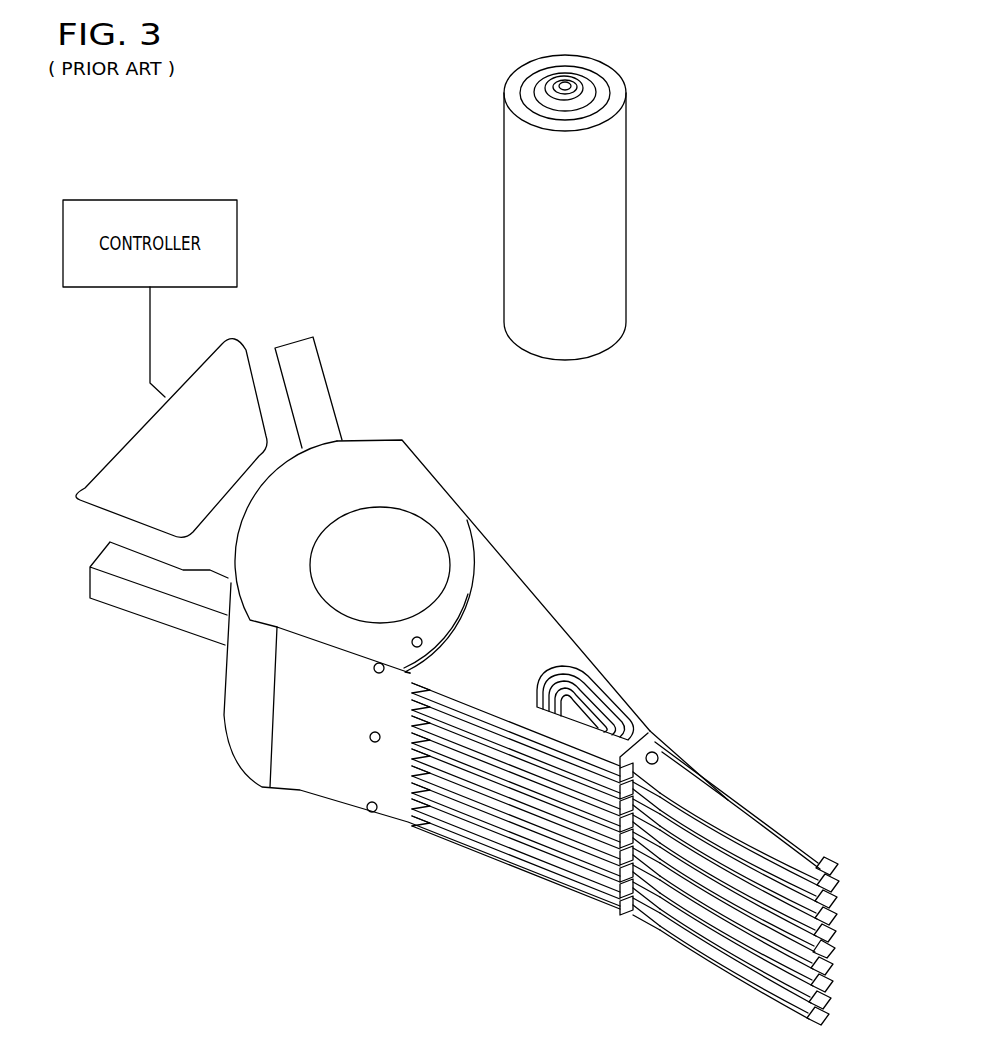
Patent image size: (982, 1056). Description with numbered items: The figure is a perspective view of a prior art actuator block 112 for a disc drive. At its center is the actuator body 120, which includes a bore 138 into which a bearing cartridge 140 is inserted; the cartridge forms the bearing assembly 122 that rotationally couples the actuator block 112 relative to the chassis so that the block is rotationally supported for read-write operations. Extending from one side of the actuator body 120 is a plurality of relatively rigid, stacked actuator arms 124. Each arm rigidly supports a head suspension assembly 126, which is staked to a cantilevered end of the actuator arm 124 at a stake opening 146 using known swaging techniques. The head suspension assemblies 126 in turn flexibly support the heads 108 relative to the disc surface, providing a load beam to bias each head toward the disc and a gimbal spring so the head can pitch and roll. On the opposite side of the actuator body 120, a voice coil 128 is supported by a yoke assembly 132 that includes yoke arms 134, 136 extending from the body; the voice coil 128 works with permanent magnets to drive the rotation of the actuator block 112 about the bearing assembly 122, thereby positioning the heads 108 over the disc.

The heads 108 is at (836, 898).
The actuator block 112 is at (527, 530).
The actuator body 120 is at (442, 591).
The bearing assembly 122 is at (549, 298).
The actuator arms 124 is at (613, 688).
The head suspension assemblies 126 is at (733, 850).
The voice coil 128 is at (238, 343).
The yoke assembly 132 is at (226, 360).
The yoke arm 134 is at (327, 373).
The yoke arm 136 is at (103, 557).
The bore 138 is at (418, 538).
The bearing cartridge 140 is at (595, 58).
The stake openings 146 is at (656, 752).